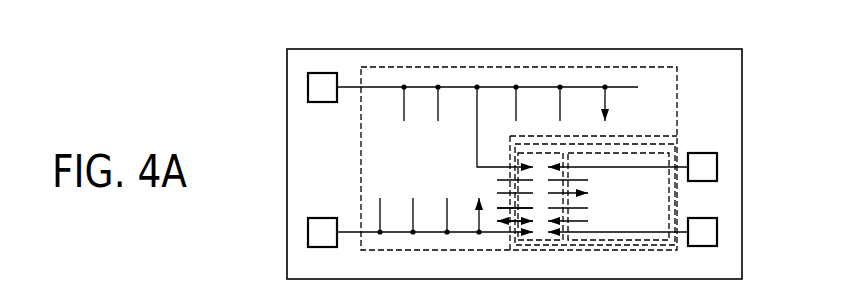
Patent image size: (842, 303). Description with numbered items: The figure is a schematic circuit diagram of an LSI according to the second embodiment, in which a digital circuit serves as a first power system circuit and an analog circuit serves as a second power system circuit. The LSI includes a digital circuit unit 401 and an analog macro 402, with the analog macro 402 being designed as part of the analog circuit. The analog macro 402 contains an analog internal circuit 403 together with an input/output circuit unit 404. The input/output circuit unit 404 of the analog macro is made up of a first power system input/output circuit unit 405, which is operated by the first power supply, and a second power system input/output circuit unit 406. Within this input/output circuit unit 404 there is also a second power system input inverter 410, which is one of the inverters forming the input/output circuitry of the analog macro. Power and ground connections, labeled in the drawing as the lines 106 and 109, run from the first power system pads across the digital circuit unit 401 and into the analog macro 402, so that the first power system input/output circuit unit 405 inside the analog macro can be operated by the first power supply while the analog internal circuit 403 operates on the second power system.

The digital circuit unit 401 is at (677, 90).
The analog macro 402 is at (637, 250).
The analog internal circuit 403 is at (674, 196).
The input/output circuit unit 404 is at (542, 241).
The first power system input/output circuit unit 405 is at (508, 241).
The second power system input/output circuit unit 406 is at (518, 176).
The second power system input inverter 410 is at (549, 188).
The VDD1 power supply line 106 is at (461, 88).
The GND1 ground line 109 is at (395, 232).